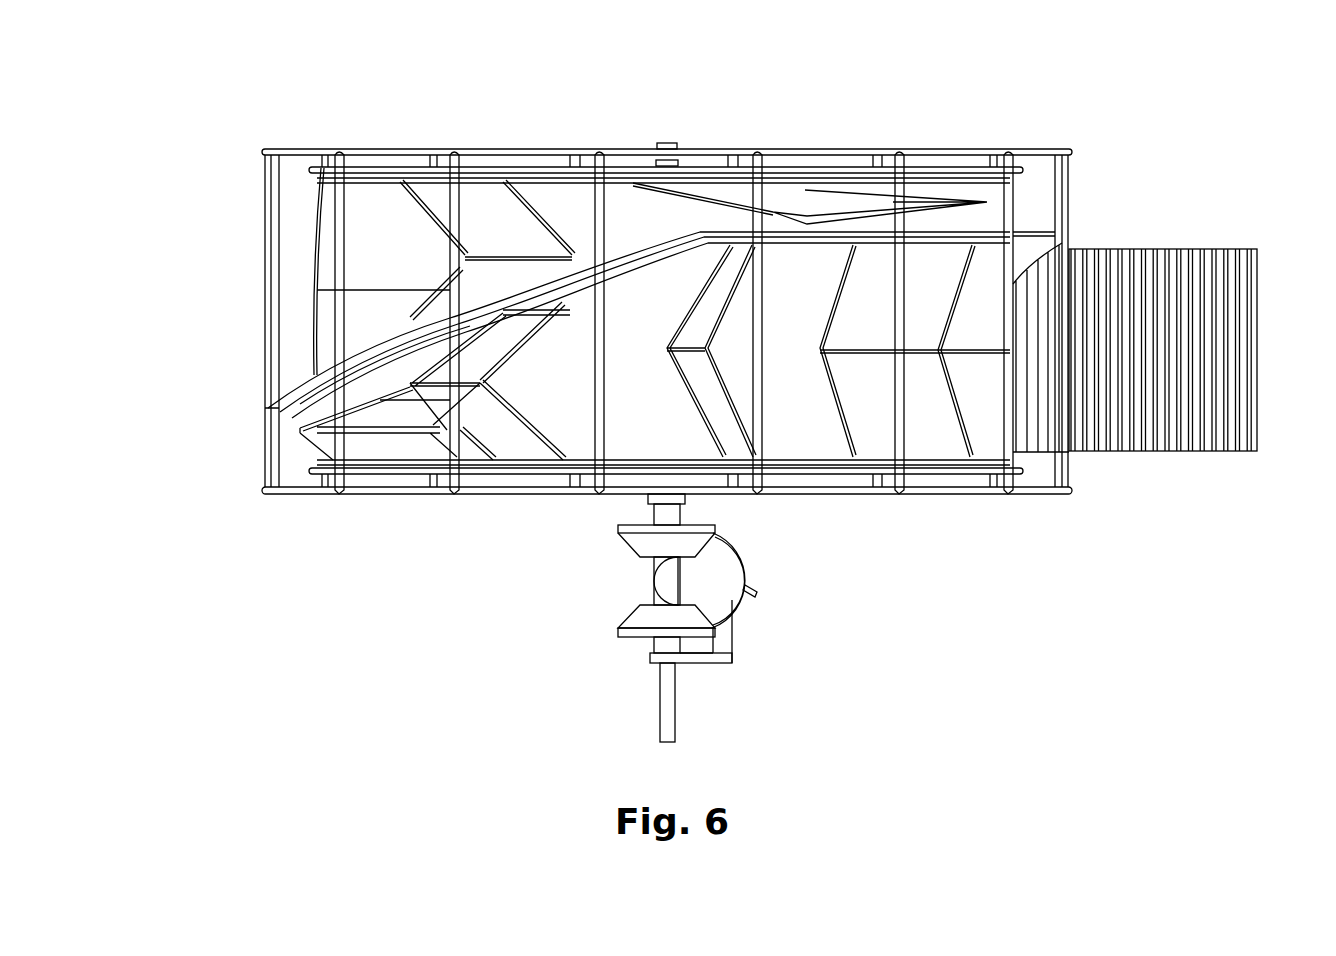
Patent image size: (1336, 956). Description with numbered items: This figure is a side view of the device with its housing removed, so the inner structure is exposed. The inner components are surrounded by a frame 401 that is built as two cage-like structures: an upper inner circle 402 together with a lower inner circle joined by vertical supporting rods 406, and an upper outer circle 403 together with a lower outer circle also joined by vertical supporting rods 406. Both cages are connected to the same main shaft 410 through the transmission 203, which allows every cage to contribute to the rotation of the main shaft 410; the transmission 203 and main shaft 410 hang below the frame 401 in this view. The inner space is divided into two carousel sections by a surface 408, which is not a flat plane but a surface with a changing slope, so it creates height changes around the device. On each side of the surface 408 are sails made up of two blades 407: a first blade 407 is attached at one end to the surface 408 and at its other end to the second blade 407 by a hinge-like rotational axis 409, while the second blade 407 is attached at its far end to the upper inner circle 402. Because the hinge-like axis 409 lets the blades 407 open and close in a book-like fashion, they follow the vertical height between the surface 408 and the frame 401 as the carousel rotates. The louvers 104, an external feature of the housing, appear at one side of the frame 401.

The frame 401 is at (709, 354).
The upper inner circle 402 is at (505, 178).
The upper outer circle 403 is at (368, 155).
The vertical supporting rods 406 is at (902, 495).
The blades 407 is at (882, 443).
The surface 408 is at (836, 240).
The hinge-like rotational axis 409 is at (317, 432).
The main shaft 410 is at (630, 713).
The transmission 203 is at (598, 587).
The louvers 104 is at (1142, 410).